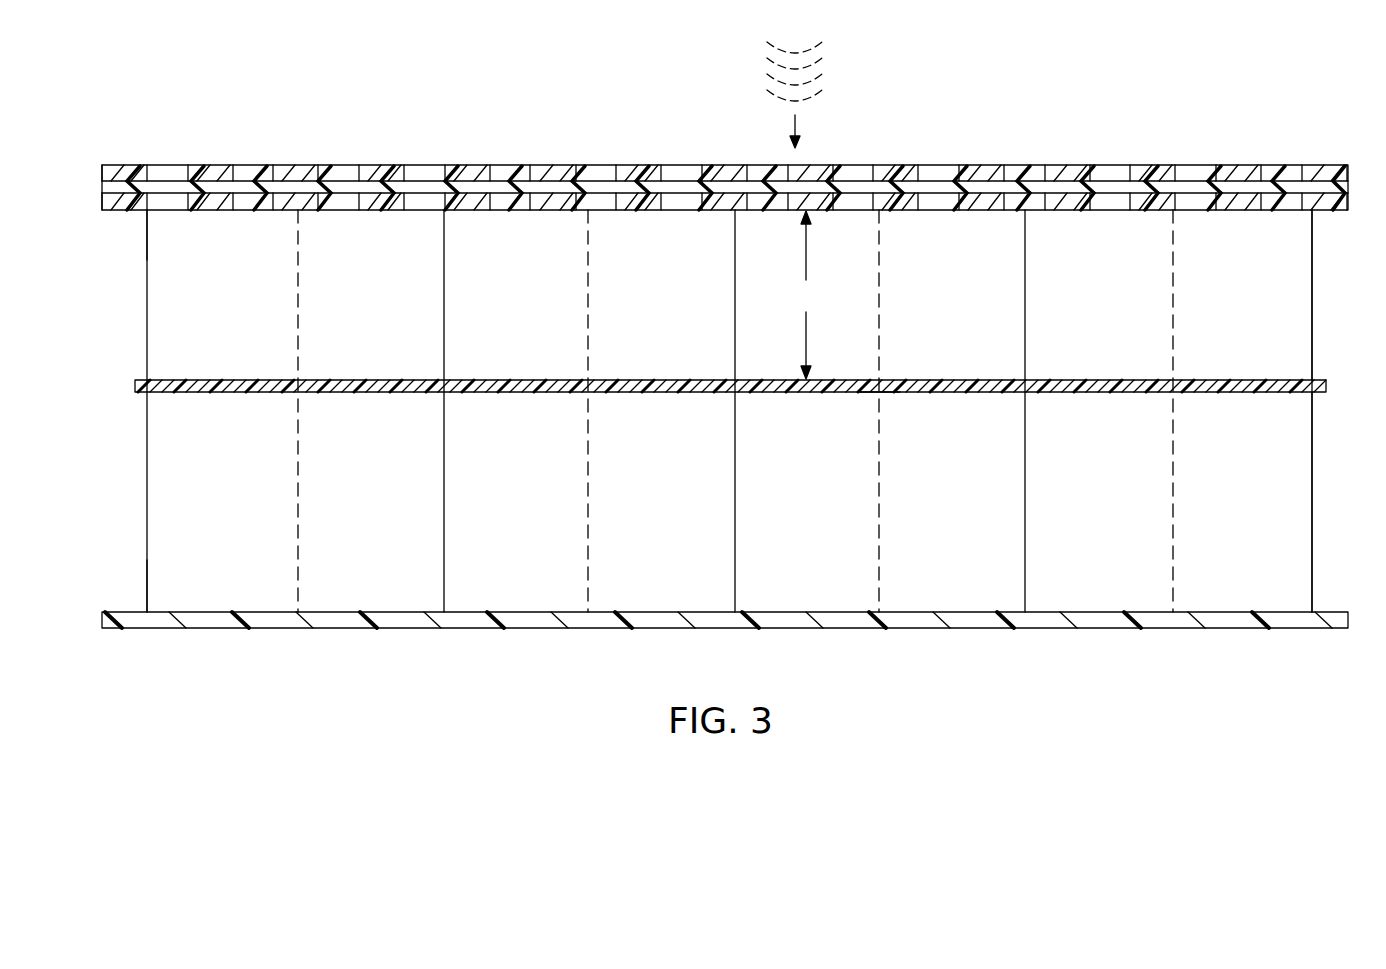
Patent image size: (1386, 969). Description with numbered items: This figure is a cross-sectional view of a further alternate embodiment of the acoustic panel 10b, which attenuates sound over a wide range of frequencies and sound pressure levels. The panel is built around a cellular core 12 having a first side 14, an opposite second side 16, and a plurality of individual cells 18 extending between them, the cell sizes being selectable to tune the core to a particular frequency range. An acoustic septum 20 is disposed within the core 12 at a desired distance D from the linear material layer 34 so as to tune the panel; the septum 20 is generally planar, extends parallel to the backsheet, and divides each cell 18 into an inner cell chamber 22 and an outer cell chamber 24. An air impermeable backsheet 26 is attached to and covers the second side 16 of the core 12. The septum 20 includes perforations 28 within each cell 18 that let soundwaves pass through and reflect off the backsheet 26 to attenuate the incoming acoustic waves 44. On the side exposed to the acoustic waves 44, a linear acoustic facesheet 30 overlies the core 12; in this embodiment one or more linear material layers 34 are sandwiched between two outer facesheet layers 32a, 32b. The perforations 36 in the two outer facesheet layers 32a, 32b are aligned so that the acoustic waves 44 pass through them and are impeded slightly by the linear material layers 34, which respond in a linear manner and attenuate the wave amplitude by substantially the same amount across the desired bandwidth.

The acoustic panel 10b is at (160, 108).
The cellular hexagonal core 12 is at (133, 446).
The first side 14 is at (131, 228).
The second side 16 is at (128, 590).
The cells 18 is at (217, 600).
The acoustic septum 20 is at (220, 393).
The inner cell chamber 22 is at (1298, 297).
The outer cell chamber 24 is at (1298, 519).
The air impermeable backsheet 26 is at (918, 630).
The perforations 28 is at (894, 402).
The linear acoustic facesheet 30 is at (1311, 133).
The outer facesheet layer 32a is at (375, 165).
The outer facesheet layer 32b is at (386, 210).
The linear material layer 34 is at (101, 187).
The perforations 36 is at (171, 217).
The acoustic waves 44 is at (806, 100).
The distance D is at (806, 295).